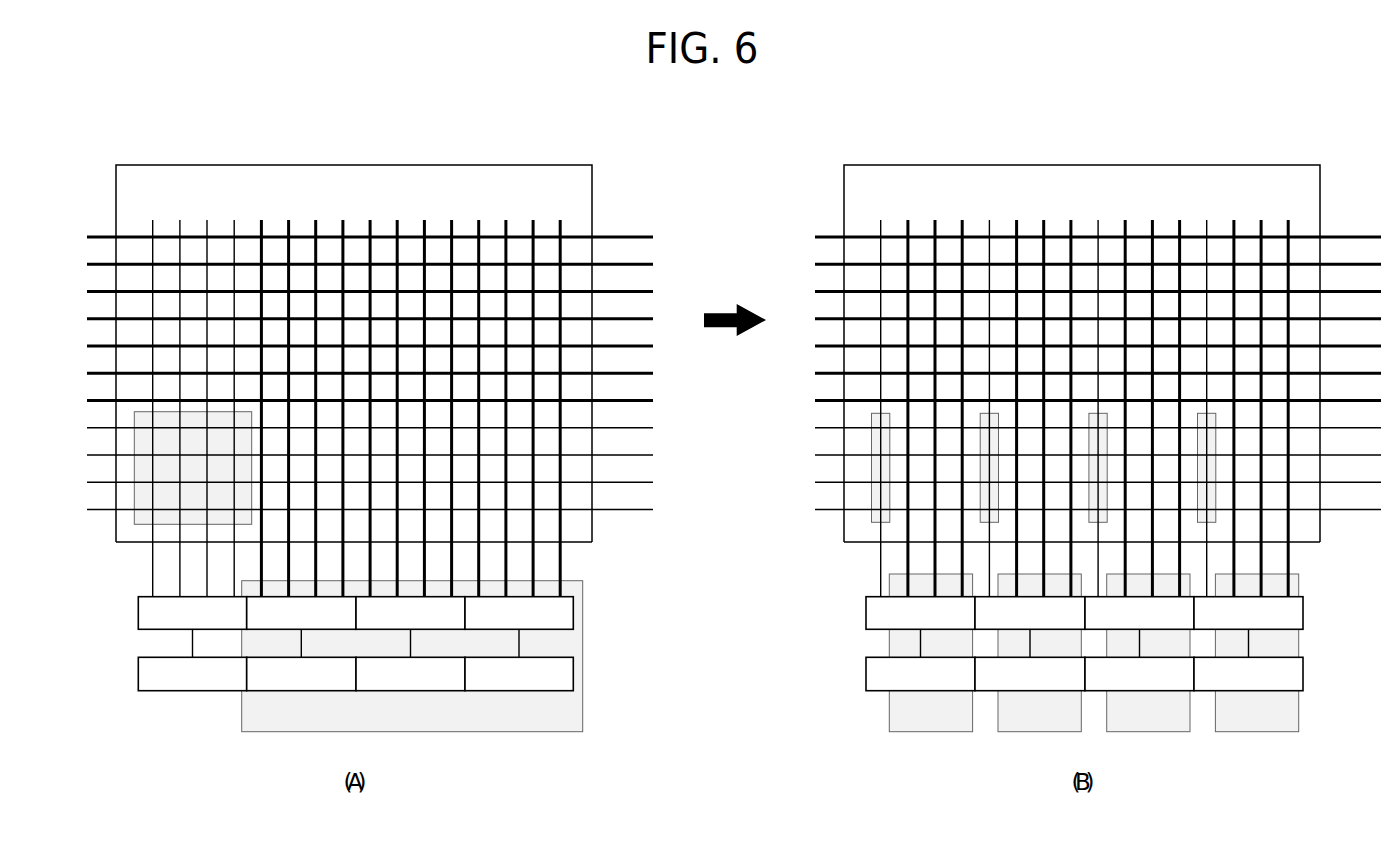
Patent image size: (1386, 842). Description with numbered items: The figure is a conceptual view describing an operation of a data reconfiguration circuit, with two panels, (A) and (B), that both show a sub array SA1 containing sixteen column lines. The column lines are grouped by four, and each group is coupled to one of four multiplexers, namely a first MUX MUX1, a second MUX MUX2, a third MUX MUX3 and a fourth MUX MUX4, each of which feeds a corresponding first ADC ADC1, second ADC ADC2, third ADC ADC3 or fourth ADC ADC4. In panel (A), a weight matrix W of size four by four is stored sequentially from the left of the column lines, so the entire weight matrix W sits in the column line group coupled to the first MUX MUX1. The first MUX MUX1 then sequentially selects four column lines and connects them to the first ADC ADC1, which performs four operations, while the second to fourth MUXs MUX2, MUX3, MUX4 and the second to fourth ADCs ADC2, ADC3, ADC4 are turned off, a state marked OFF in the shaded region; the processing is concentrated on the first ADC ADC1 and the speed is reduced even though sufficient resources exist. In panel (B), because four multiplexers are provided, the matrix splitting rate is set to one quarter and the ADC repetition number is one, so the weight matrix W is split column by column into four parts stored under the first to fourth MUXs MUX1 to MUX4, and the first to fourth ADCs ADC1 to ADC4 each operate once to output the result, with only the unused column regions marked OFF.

The sub array SA1 is at (718, 353).
The weight matrix W is at (675, 468).
The first MUX MUX1 is at (556, 627).
The second MUX MUX2 is at (666, 627).
The third MUX MUX3 is at (775, 627).
The fourth MUX MUX4 is at (884, 627).
The first ADC ADC1 is at (556, 673).
The second ADC ADC2 is at (666, 673).
The third ADC ADC3 is at (775, 673).
The fourth ADC ADC4 is at (884, 673).
The turned-off region OFF is at (770, 653).